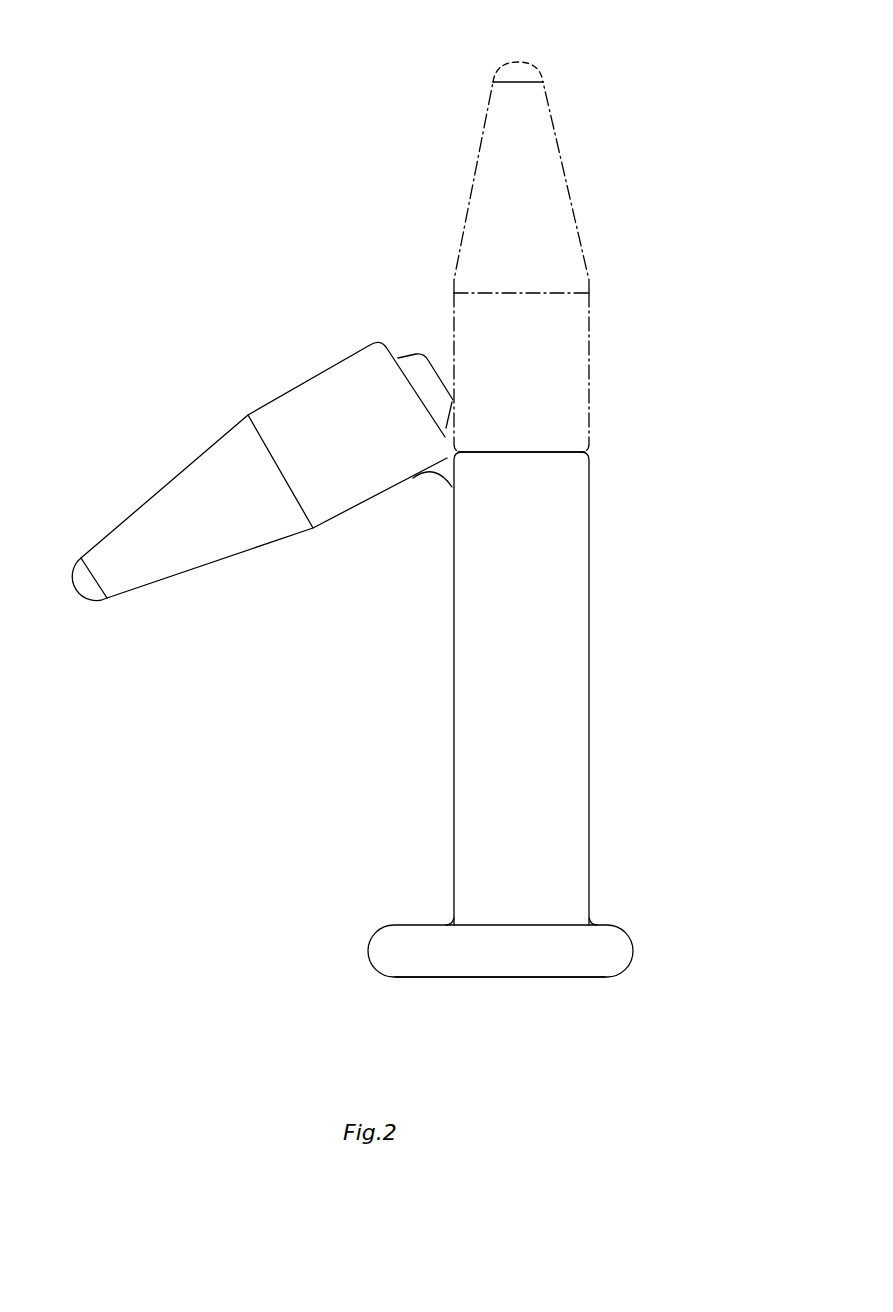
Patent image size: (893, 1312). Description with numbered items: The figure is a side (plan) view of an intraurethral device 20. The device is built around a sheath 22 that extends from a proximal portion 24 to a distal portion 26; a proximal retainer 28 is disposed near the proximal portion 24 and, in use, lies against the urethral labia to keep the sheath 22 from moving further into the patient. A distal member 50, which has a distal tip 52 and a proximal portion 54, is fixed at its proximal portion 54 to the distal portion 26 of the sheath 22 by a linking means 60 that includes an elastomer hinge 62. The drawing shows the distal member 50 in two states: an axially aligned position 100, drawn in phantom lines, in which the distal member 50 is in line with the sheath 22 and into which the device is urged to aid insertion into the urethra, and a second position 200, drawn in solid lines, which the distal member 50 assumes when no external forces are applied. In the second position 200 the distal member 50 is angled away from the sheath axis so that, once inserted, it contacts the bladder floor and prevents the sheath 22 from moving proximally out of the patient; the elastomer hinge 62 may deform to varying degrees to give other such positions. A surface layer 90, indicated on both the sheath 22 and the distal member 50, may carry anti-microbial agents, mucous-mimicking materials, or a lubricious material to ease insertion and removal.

The intraurethral device 20 is at (238, 773).
The sheath 22 is at (565, 653).
The proximal portion 24 is at (633, 920).
The distal portion 26 is at (597, 478).
The proximal retainer 28 is at (420, 965).
The distal member 50 is at (556, 265).
The distal tip 52 is at (533, 63).
The proximal portion 54 is at (597, 433).
The linking means 60 is at (412, 497).
The elastomer hinge 62 is at (443, 466).
The surface layer 90 is at (548, 768).
The axially aligned position 100 is at (590, 178).
The second position 200 is at (165, 448).